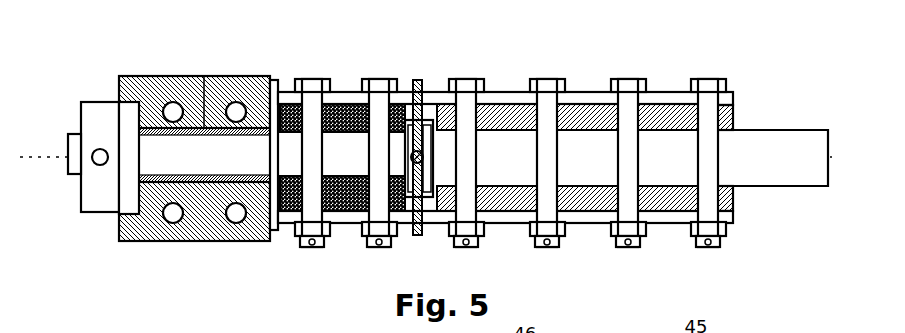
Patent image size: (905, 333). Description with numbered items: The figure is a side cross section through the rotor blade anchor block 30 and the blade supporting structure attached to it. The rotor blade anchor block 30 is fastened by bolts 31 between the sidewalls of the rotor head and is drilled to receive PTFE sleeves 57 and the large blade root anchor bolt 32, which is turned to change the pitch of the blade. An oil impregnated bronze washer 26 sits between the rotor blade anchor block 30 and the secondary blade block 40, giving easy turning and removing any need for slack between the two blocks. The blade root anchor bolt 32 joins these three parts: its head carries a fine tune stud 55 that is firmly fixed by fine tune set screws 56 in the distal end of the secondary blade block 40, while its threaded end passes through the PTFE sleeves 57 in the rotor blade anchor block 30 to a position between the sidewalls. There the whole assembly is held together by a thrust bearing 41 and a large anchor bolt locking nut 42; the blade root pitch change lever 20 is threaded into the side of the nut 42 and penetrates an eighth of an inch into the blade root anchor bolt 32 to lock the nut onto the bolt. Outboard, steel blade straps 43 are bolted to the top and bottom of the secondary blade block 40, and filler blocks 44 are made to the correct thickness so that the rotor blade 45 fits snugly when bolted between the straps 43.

The blade root pitch change lever 20 is at (98, 159).
The oil impregnated bronze washer 26 is at (281, 74).
The rotor blade anchor block 30 is at (194, 158).
The bolts 31 is at (236, 214).
The blade root anchor bolt 32 is at (63, 146).
The secondary blade block 40 is at (342, 157).
The thrust bearing 41 is at (130, 120).
The anchor bolt locking nut 42 is at (100, 120).
The steel blade straps 43 is at (349, 86).
The filler blocks 44 is at (577, 157).
The rotor blades 45 is at (583, 147).
The fine tune stud 55 is at (424, 160).
The fine tune set screws 56 is at (421, 76).
The PTFE sleeves 57 is at (204, 76).